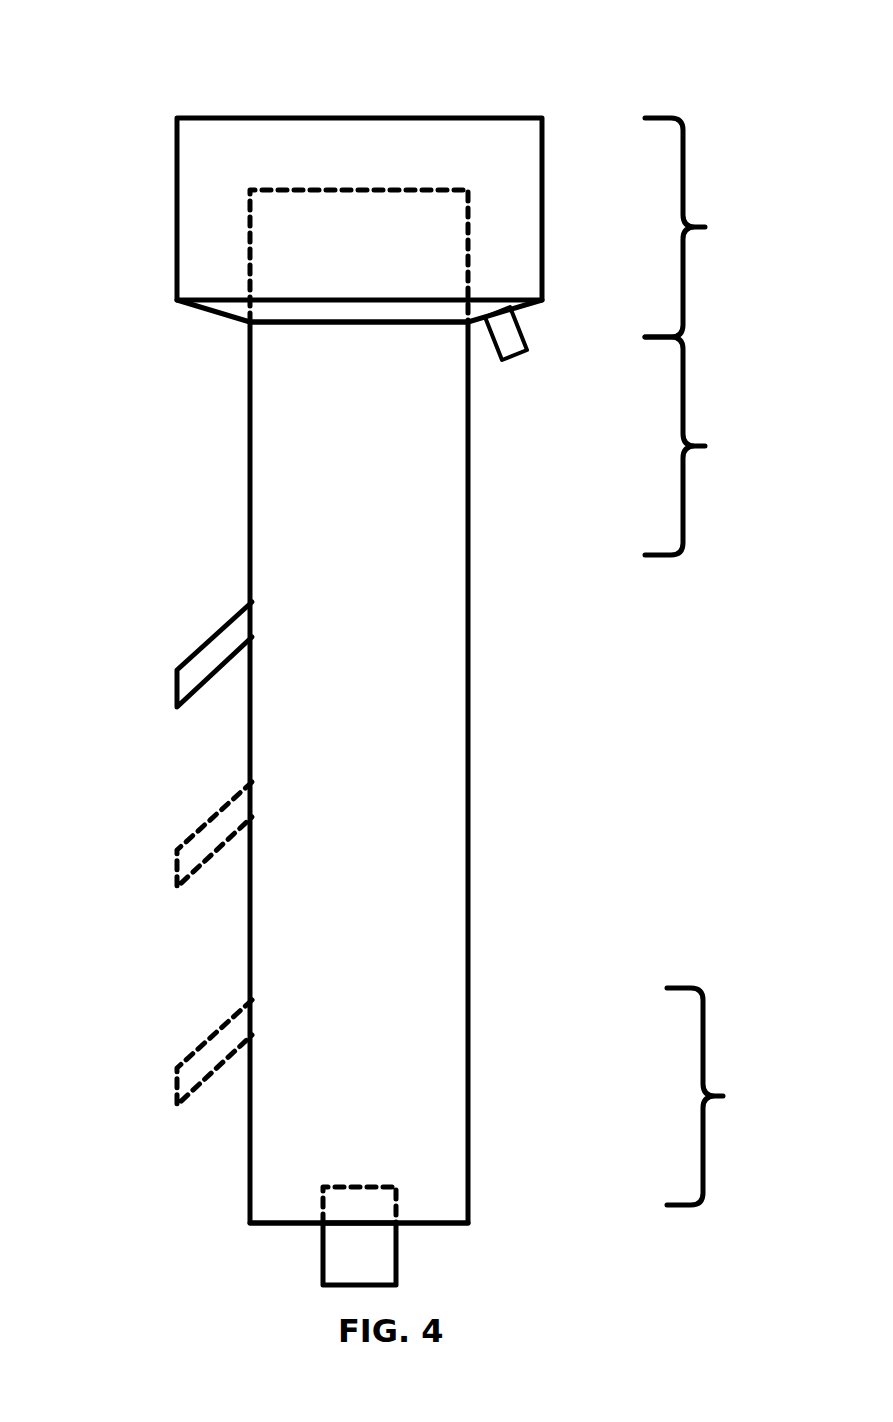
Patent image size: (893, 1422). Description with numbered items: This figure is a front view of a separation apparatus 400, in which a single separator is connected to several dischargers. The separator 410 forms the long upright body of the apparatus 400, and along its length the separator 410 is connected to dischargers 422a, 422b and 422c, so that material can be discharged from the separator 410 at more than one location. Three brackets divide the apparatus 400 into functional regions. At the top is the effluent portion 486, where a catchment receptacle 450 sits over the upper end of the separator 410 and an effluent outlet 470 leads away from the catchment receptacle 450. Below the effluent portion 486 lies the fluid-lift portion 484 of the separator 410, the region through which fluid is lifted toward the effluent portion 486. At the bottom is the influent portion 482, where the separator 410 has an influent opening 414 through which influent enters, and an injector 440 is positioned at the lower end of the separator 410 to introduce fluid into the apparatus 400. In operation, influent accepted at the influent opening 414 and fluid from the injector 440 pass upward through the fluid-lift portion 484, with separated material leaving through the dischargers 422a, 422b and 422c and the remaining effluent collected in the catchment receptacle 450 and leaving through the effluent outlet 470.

The apparatus 400 is at (106, 56).
The catchment receptacle 450 is at (197, 222).
The effluent outlet 470 is at (500, 330).
The separator 410 is at (430, 770).
The influent opening 414 is at (283, 1224).
The injector 440 is at (378, 1240).
The discharger 422a is at (213, 652).
The discharger 422b is at (213, 832).
The discharger 422c is at (213, 1050).
The effluent portion 486 is at (702, 227).
The fluid-lift portion 484 is at (702, 446).
The influent portion 482 is at (722, 1096).